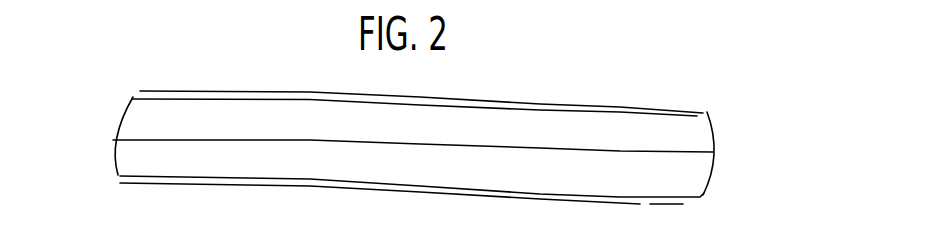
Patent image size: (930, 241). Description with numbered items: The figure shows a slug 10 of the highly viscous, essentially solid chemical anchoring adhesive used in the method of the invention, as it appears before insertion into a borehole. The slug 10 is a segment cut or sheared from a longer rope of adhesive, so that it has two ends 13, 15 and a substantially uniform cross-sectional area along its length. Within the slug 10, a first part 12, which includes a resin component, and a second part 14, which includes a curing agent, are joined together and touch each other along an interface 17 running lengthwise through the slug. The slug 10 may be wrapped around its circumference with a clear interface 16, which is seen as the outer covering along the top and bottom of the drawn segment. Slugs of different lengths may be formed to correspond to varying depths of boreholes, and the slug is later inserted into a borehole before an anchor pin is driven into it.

The slug 10 is at (424, 142).
The first part 12 is at (698, 143).
The end 13 is at (110, 141).
The second part 14 is at (702, 173).
The end 15 is at (714, 157).
The clear interface 16 is at (476, 240).
The interface 17 is at (410, 143).